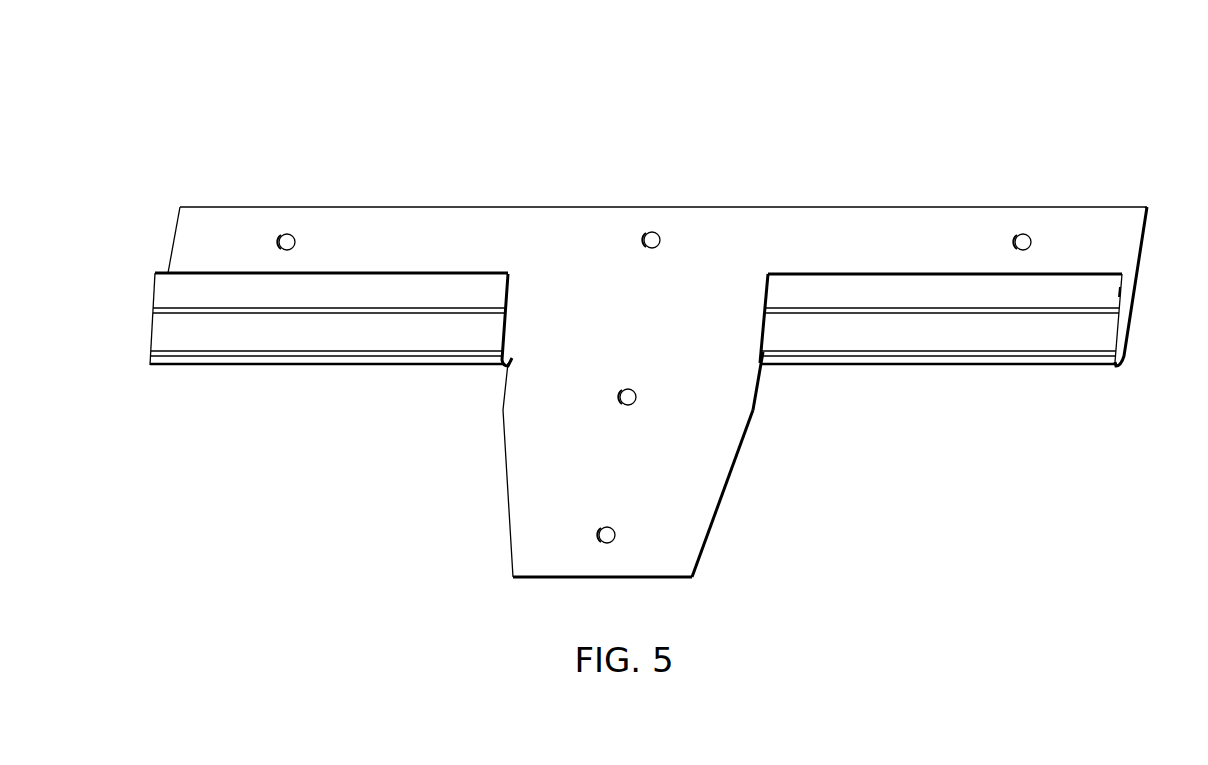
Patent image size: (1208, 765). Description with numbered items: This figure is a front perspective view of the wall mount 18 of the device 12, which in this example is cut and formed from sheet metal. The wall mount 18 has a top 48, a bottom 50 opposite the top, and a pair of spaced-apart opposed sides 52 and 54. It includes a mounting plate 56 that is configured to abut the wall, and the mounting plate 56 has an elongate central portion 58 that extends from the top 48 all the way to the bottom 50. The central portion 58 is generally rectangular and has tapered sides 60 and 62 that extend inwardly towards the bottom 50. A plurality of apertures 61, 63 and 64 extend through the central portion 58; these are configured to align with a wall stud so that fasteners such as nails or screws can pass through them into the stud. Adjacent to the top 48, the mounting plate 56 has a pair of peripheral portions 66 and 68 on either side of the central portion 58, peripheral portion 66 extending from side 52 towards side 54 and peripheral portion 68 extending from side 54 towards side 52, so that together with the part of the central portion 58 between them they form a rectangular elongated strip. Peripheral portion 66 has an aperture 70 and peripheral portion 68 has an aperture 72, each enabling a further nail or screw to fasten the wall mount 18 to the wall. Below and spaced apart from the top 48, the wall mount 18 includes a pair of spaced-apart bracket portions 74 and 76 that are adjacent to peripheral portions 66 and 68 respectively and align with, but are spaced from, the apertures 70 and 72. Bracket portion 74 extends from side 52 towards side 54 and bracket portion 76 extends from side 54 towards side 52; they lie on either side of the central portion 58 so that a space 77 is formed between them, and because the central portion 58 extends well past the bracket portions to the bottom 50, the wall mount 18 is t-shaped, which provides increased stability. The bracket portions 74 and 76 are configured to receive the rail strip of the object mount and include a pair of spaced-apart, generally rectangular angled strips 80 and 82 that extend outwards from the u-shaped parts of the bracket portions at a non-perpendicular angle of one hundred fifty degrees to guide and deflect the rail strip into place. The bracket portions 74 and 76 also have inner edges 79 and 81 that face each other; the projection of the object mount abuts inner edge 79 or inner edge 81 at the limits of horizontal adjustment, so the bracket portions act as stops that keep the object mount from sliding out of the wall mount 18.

The device 12 is at (190, 128).
The wall mount 18 is at (193, 193).
The top 48 is at (431, 205).
The bottom 50 is at (531, 583).
The side 52 is at (180, 231).
The side 54 is at (1147, 243).
The mounting plate 56 is at (577, 233).
The central portion 58 is at (607, 340).
The tapered side 60 is at (505, 465).
The aperture 61 is at (662, 240).
The tapered side 62 is at (735, 472).
The aperture 63 is at (634, 390).
The aperture 64 is at (612, 528).
The peripheral portion 66 is at (354, 247).
The peripheral portion 68 is at (879, 247).
The aperture 70 is at (285, 232).
The aperture 72 is at (1027, 232).
The bracket portion 74 is at (267, 382).
The bracket portion 76 is at (948, 385).
The space 77 is at (739, 372).
The inner edge 79 is at (510, 327).
The angled strip 80 is at (187, 290).
The inner edge 81 is at (765, 328).
The angled strip 82 is at (1048, 290).